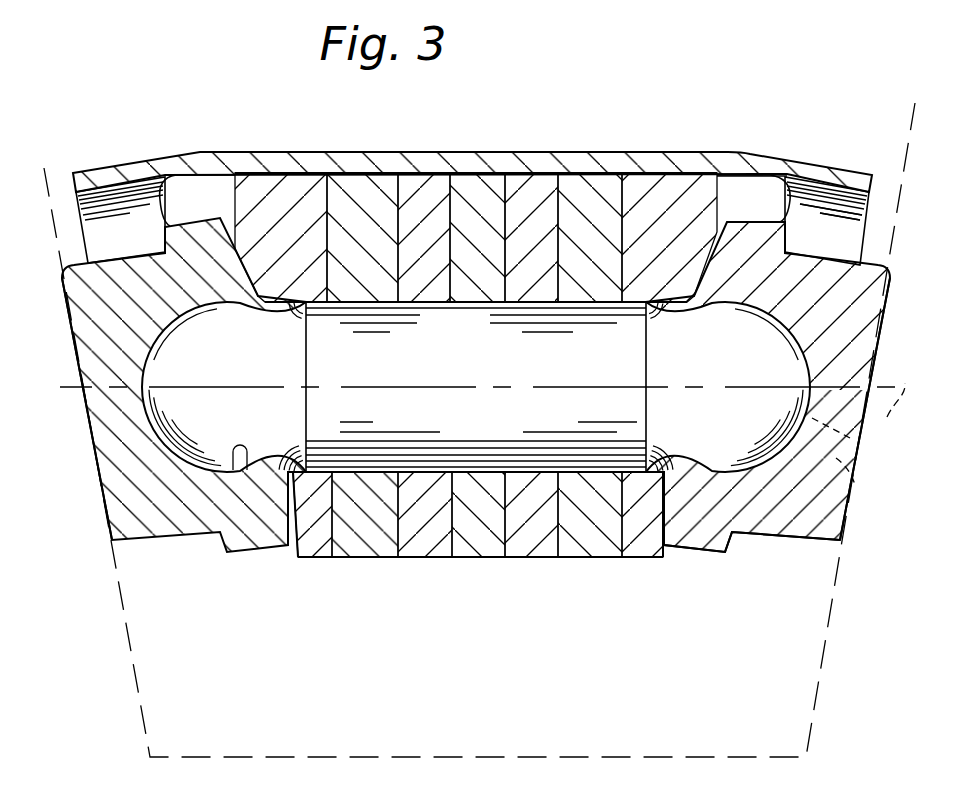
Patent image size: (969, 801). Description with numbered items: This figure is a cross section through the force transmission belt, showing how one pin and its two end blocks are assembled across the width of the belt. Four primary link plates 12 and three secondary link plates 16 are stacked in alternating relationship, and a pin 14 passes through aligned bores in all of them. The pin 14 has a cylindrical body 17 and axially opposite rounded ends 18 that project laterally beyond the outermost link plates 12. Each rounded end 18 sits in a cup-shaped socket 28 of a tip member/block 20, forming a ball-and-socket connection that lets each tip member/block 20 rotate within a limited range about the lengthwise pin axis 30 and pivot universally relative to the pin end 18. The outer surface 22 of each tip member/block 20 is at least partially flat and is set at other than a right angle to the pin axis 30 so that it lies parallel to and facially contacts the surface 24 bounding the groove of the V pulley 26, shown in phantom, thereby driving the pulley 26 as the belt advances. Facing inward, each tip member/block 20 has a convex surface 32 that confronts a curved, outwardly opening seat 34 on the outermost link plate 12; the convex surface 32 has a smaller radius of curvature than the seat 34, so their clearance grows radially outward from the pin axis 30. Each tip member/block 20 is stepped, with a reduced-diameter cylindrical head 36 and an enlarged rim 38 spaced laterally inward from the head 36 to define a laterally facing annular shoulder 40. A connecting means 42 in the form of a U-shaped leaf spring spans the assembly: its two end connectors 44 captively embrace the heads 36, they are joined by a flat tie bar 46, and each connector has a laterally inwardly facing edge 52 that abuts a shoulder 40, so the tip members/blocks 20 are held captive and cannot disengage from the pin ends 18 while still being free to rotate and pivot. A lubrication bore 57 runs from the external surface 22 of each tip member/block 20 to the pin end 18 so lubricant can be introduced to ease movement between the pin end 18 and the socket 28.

The primary link plate 12 is at (290, 198).
The pin 14 is at (575, 350).
The secondary link plate 16 is at (363, 190).
The cylindrical body 17 is at (446, 425).
The rounded end 18 is at (208, 347).
The tip member/block 20 is at (44, 168).
The surface 22 is at (97, 458).
The pulley surface 24 is at (120, 588).
The V pulley 26 is at (225, 387).
The cup-shaped socket 28 is at (240, 449).
The pin axis 30 is at (888, 412).
The convex surface 32 is at (660, 500).
The curved seat 34 is at (737, 218).
The cylindrical head 36 is at (805, 546).
The enlarged rim 38 is at (775, 212).
The annular shoulder 40 is at (797, 237).
The connecting means 42 is at (468, 146).
The end connector 44 is at (88, 168).
The tie bar 46 is at (518, 162).
The laterally inwardly facing edge 52 is at (178, 190).
The lubrication bore 57 is at (858, 487).